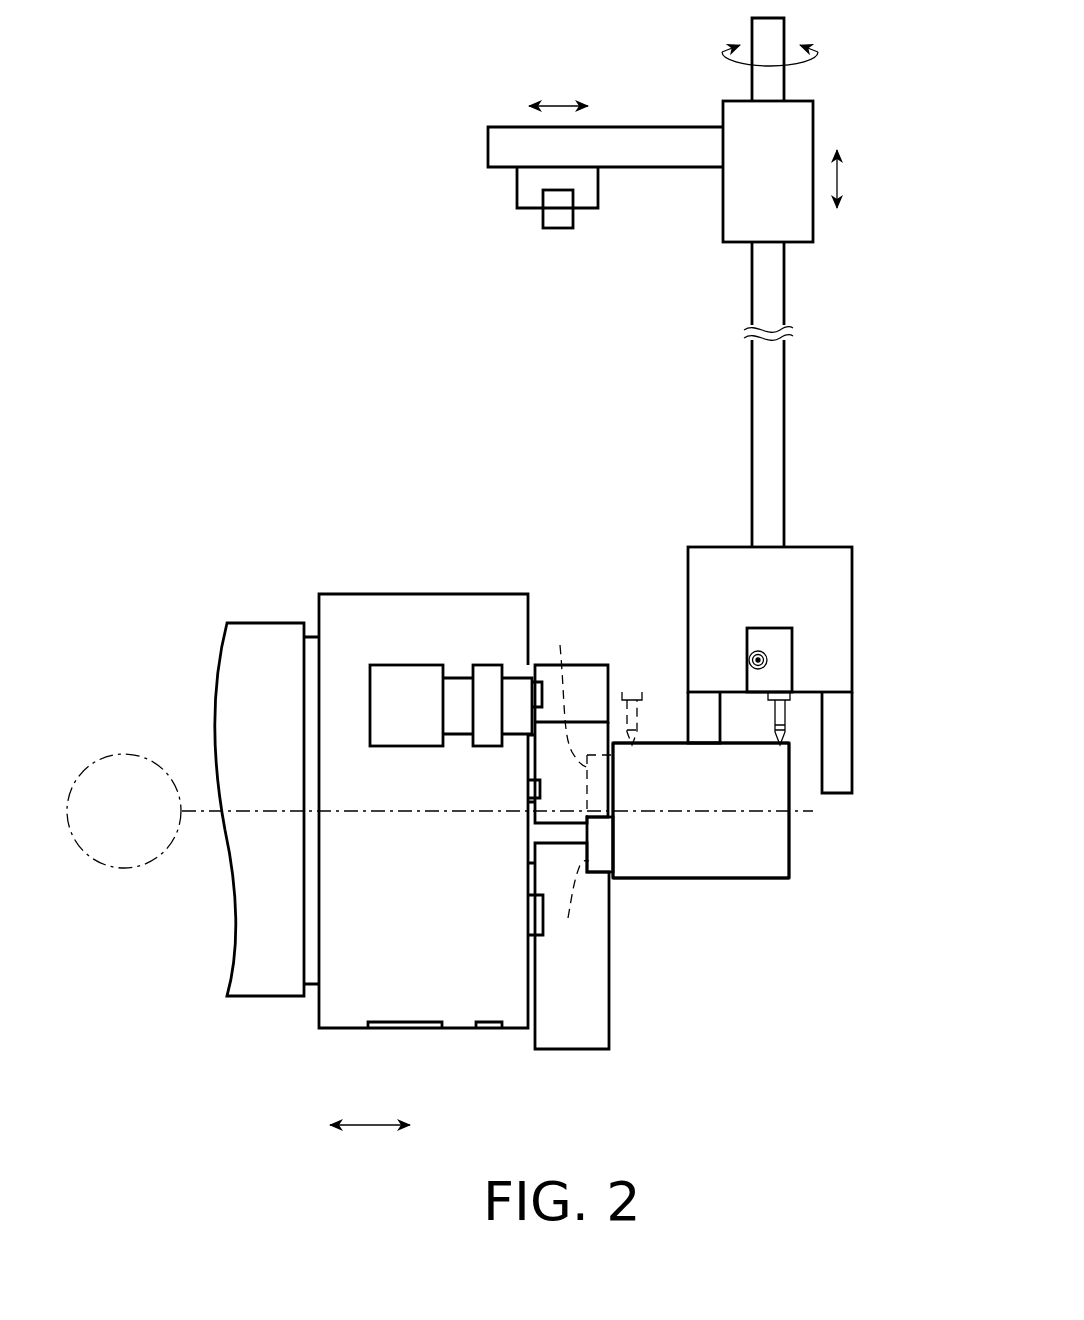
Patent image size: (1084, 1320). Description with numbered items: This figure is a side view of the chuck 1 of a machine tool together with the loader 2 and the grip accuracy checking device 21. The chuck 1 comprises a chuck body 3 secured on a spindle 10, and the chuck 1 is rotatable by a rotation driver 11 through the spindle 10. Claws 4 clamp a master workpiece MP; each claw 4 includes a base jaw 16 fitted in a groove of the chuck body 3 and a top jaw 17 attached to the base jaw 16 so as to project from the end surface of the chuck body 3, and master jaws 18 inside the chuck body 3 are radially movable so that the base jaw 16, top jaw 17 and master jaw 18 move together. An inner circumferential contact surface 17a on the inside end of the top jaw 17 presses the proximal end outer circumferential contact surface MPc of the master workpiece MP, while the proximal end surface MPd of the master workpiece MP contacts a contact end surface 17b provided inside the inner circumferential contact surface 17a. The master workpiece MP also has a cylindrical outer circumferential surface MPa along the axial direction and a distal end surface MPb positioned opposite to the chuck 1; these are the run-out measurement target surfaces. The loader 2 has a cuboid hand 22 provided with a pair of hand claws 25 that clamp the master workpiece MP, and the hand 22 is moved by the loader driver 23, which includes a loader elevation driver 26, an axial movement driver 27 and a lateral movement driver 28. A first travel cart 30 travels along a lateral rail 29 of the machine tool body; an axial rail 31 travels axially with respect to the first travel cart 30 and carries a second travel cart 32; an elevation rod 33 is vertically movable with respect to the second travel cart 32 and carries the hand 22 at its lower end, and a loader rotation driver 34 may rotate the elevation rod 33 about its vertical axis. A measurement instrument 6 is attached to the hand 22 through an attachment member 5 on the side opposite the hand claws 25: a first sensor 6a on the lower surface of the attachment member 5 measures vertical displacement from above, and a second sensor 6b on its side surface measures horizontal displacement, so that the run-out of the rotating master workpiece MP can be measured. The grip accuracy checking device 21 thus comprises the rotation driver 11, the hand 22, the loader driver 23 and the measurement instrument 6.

The chuck 1 is at (545, 590).
The loader 2 is at (865, 372).
The chuck body 3 is at (463, 592).
The claw 4 is at (608, 652).
The attachment member 5 is at (767, 628).
The measurement instrument 6 is at (716, 610).
The first sensor 6a is at (775, 713).
The second sensor 6b is at (750, 659).
The spindle 10 is at (265, 622).
The rotation driver 11 is at (112, 752).
The base jaw 16 is at (508, 685).
The top jaw 17 is at (600, 665).
The inner circumferential contact surface 17a is at (565, 783).
The contact end surface 17b is at (590, 795).
The master jaw 18 is at (406, 685).
The grip accuracy checking device 21 is at (843, 975).
The hand 22 is at (832, 556).
The loader driver 23 is at (849, 109).
The hand claw 25 is at (840, 730).
The loader elevation driver 26 is at (705, 194).
The axial movement driver 27 is at (469, 187).
The lateral movement driver 28 is at (469, 187).
The lateral rail 29 is at (560, 216).
The first travel cart 30 is at (523, 188).
The axial rail 31 is at (648, 130).
The second travel cart 32 is at (705, 194).
The elevation rod 33 is at (773, 297).
The loader rotation driver 34 is at (730, 205).
The master workpiece MP is at (714, 882).
The cylindrical outer circumferential surface MPa is at (771, 880).
The distal end surface MPb is at (789, 850).
The proximal end outer circumferential contact surface MPc is at (600, 873).
The proximal end surface MPd is at (587, 843).